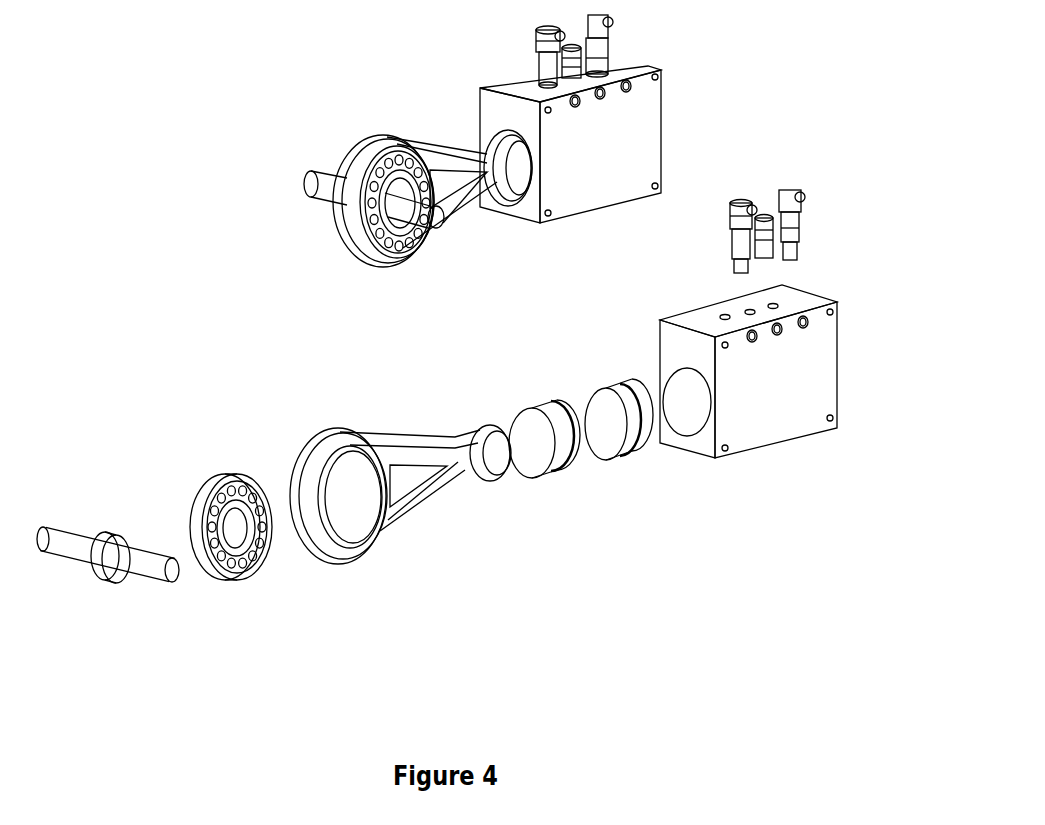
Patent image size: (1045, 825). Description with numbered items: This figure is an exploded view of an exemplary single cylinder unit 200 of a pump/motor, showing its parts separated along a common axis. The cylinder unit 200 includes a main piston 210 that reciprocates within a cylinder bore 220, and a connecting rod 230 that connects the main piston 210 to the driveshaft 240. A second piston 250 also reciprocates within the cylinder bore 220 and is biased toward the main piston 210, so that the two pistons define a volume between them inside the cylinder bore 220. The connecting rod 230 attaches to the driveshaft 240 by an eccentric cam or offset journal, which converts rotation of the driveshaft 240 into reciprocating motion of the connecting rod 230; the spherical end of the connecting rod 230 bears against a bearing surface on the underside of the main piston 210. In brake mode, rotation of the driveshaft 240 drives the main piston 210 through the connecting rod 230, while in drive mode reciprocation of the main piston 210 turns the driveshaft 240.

The cylinder unit 200 is at (697, 70).
The main piston 210 is at (539, 478).
The cylinder bore 220 is at (695, 407).
The connecting rod 230 is at (382, 530).
The driveshaft 240 is at (155, 565).
The second piston 250 is at (637, 442).